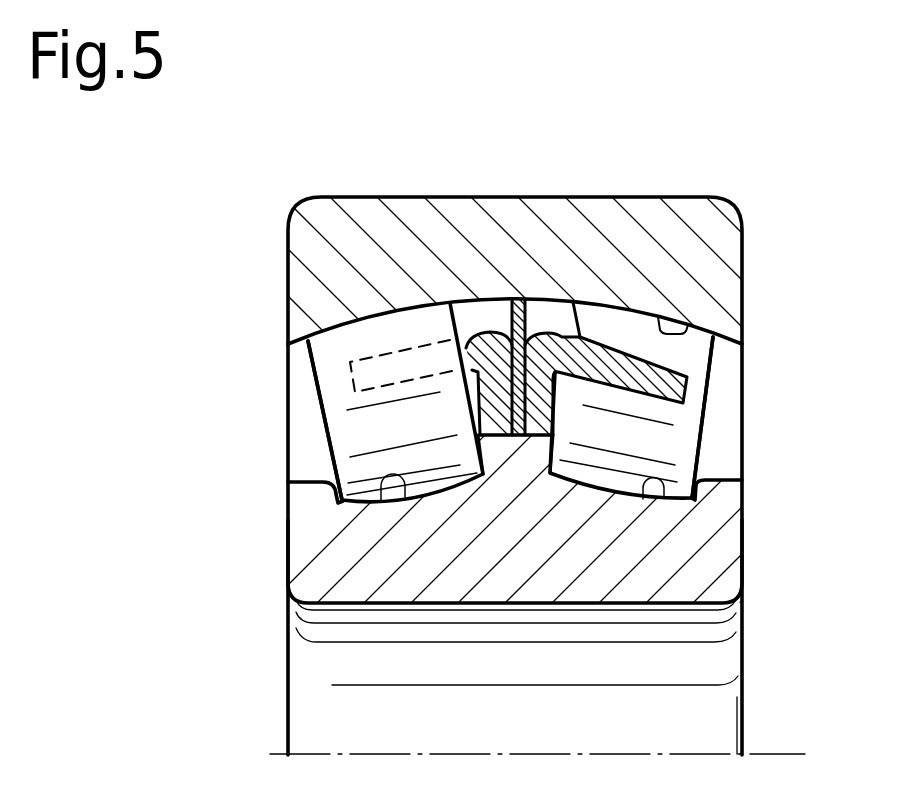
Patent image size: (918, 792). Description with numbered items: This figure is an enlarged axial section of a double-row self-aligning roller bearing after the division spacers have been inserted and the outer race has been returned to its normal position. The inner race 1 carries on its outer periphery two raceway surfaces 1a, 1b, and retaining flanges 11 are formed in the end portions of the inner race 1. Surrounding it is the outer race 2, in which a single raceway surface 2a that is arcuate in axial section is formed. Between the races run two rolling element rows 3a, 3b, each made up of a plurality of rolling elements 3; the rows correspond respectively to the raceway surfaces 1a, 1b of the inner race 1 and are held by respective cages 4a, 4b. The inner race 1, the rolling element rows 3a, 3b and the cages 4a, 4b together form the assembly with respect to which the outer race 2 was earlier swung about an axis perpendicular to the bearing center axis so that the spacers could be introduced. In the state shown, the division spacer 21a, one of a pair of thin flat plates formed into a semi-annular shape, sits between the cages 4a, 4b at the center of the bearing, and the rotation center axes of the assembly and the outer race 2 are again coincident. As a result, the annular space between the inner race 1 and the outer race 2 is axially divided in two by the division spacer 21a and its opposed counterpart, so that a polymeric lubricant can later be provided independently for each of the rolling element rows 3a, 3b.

The inner race 1 is at (697, 583).
The raceway surface 1a is at (655, 497).
The raceway surface 1b is at (378, 480).
The outer race 2 is at (617, 218).
The raceway surface 2a is at (689, 328).
The rolling element 3 is at (350, 408).
The rolling element row 3a is at (726, 386).
The rolling element row 3b is at (311, 455).
The cage 4a is at (557, 300).
The cage 4b is at (463, 300).
The retaining flange 11 is at (289, 498).
The division spacer 21a is at (493, 318).